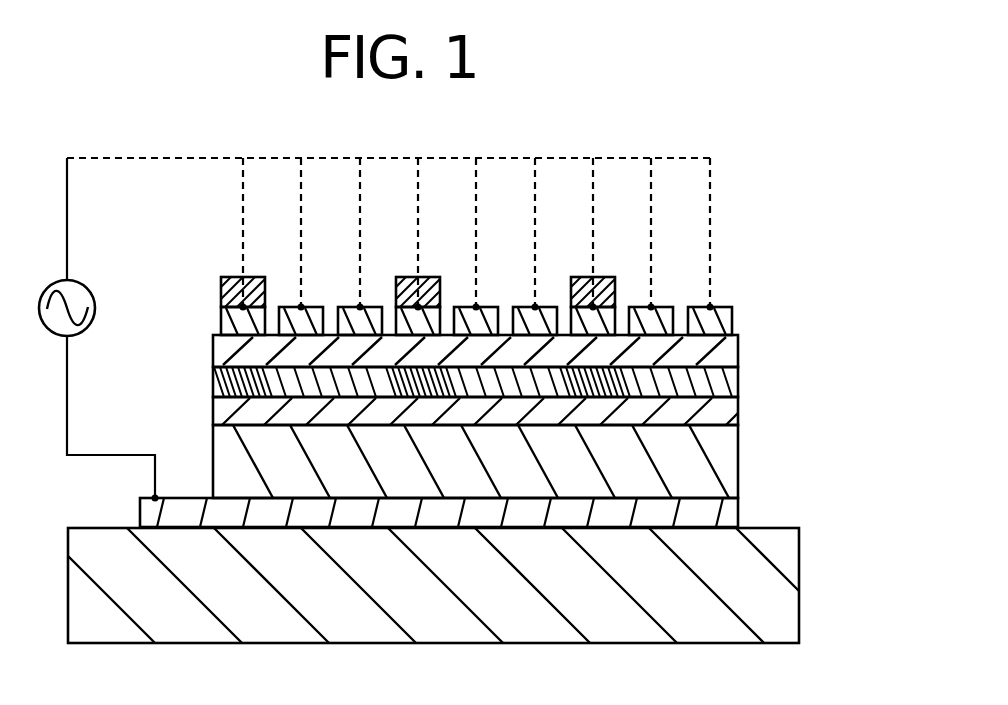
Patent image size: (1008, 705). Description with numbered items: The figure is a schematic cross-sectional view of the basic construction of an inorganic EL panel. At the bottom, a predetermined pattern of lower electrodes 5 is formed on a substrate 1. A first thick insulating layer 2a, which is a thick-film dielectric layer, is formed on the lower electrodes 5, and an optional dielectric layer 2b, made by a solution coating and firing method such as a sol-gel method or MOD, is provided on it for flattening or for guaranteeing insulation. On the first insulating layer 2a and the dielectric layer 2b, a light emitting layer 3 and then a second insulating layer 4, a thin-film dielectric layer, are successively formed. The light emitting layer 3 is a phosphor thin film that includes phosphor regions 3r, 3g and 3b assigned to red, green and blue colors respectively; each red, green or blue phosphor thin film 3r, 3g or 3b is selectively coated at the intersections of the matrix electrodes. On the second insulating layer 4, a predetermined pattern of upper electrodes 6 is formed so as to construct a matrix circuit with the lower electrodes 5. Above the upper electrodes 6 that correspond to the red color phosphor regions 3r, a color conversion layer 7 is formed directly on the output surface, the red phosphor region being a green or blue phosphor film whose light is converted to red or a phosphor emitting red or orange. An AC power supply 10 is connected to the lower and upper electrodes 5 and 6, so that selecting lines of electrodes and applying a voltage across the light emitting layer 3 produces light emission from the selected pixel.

The substrate 1 is at (783, 602).
The first thick insulating layer 2a is at (735, 468).
The dielectric layer 2b is at (733, 418).
The light emitting layer 3 is at (735, 383).
The red color phosphor region 3r is at (265, 300).
The green phosphor region 3g is at (310, 368).
The blue phosphor region 3b is at (358, 372).
The second insulating layer 4 is at (733, 355).
The lower electrodes 5 is at (735, 518).
The upper electrodes 6 is at (735, 319).
The color conversion layer 7 is at (615, 282).
The AC power supply 10 is at (374, 330).